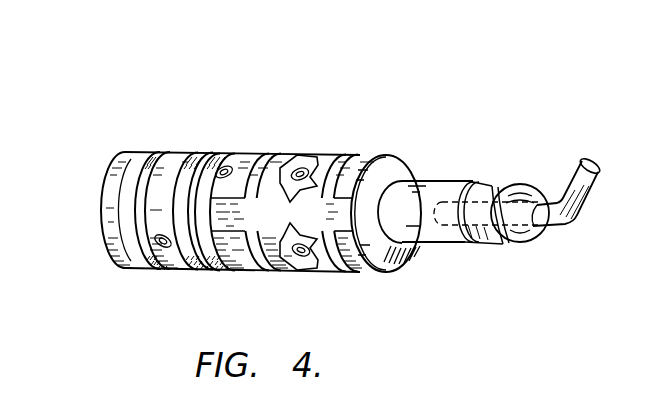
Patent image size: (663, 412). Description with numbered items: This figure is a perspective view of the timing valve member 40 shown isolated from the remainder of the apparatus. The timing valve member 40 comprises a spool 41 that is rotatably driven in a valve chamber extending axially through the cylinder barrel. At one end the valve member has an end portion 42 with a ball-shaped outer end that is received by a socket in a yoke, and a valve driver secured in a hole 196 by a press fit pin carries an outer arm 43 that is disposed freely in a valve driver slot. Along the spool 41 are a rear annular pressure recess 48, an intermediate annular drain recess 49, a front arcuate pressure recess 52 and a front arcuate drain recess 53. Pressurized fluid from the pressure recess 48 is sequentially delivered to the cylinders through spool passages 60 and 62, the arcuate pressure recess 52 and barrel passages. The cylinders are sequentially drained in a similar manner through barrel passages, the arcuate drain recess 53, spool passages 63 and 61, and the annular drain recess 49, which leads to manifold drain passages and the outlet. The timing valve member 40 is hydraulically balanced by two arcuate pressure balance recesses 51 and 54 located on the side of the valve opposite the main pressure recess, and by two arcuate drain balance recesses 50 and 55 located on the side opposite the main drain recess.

The timing valve member 40 is at (151, 144).
The spool 41 is at (397, 272).
The end portion 42 is at (458, 181).
The outer arm 43 is at (588, 158).
The hole 196 is at (502, 185).
The rear annular pressure recess 48 is at (153, 221).
The intermediate annular drain recess 49 is at (207, 202).
The spool passage 60 is at (173, 260).
The spool passage 61 is at (242, 151).
The arcuate drain balance recess 50 is at (252, 270).
The arcuate pressure balance recess 51 is at (266, 152).
The spool passage 62 is at (304, 154).
The spool passage 63 is at (281, 272).
The front arcuate pressure recess 52 is at (330, 152).
The front arcuate drain recess 53 is at (316, 271).
The arcuate pressure balance recess 54 is at (324, 152).
The arcuate drain balance recess 55 is at (331, 272).